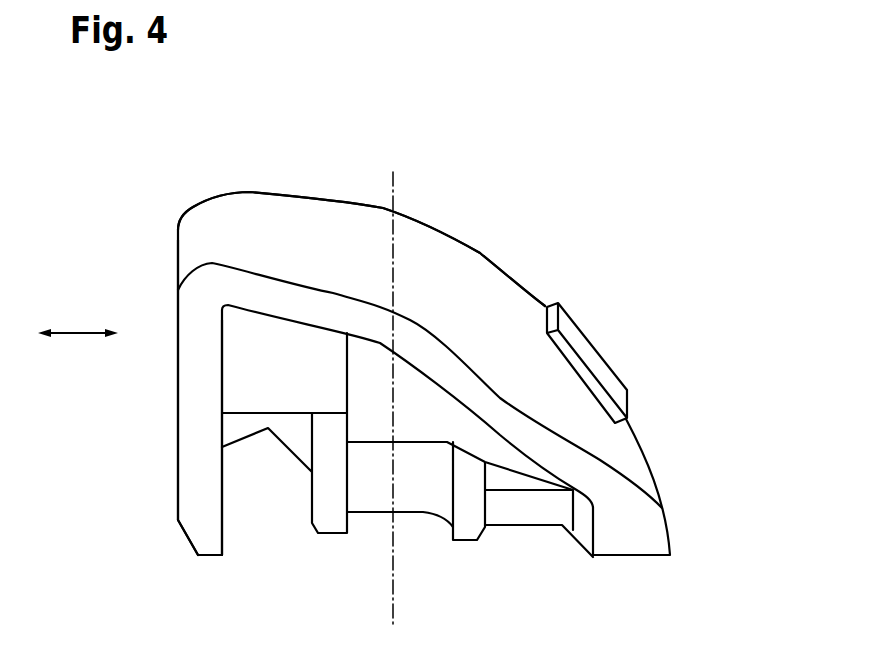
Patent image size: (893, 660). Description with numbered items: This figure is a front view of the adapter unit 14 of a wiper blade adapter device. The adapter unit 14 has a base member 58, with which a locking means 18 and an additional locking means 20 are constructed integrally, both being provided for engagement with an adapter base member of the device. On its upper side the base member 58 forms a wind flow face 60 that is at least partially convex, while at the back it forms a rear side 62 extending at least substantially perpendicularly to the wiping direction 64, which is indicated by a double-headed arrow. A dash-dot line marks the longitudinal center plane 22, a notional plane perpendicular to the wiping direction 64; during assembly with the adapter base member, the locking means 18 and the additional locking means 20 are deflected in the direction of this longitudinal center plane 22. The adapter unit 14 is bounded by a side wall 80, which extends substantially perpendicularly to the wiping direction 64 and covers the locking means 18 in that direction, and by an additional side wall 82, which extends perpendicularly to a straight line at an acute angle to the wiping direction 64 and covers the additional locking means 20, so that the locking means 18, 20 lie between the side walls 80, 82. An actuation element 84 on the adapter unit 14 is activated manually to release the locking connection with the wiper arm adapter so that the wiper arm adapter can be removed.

The adapter unit 14 is at (174, 156).
The locking means 18 is at (332, 513).
The additional locking means 20 is at (470, 527).
The longitudinal center plane 22 is at (395, 612).
The base member 58 is at (434, 253).
The wind flow face 60 is at (506, 296).
The rear side 62 is at (172, 457).
The wiping direction 64 is at (78, 333).
The side wall 80 is at (197, 393).
The additional side wall 82 is at (628, 462).
The actuation element 84 is at (602, 373).